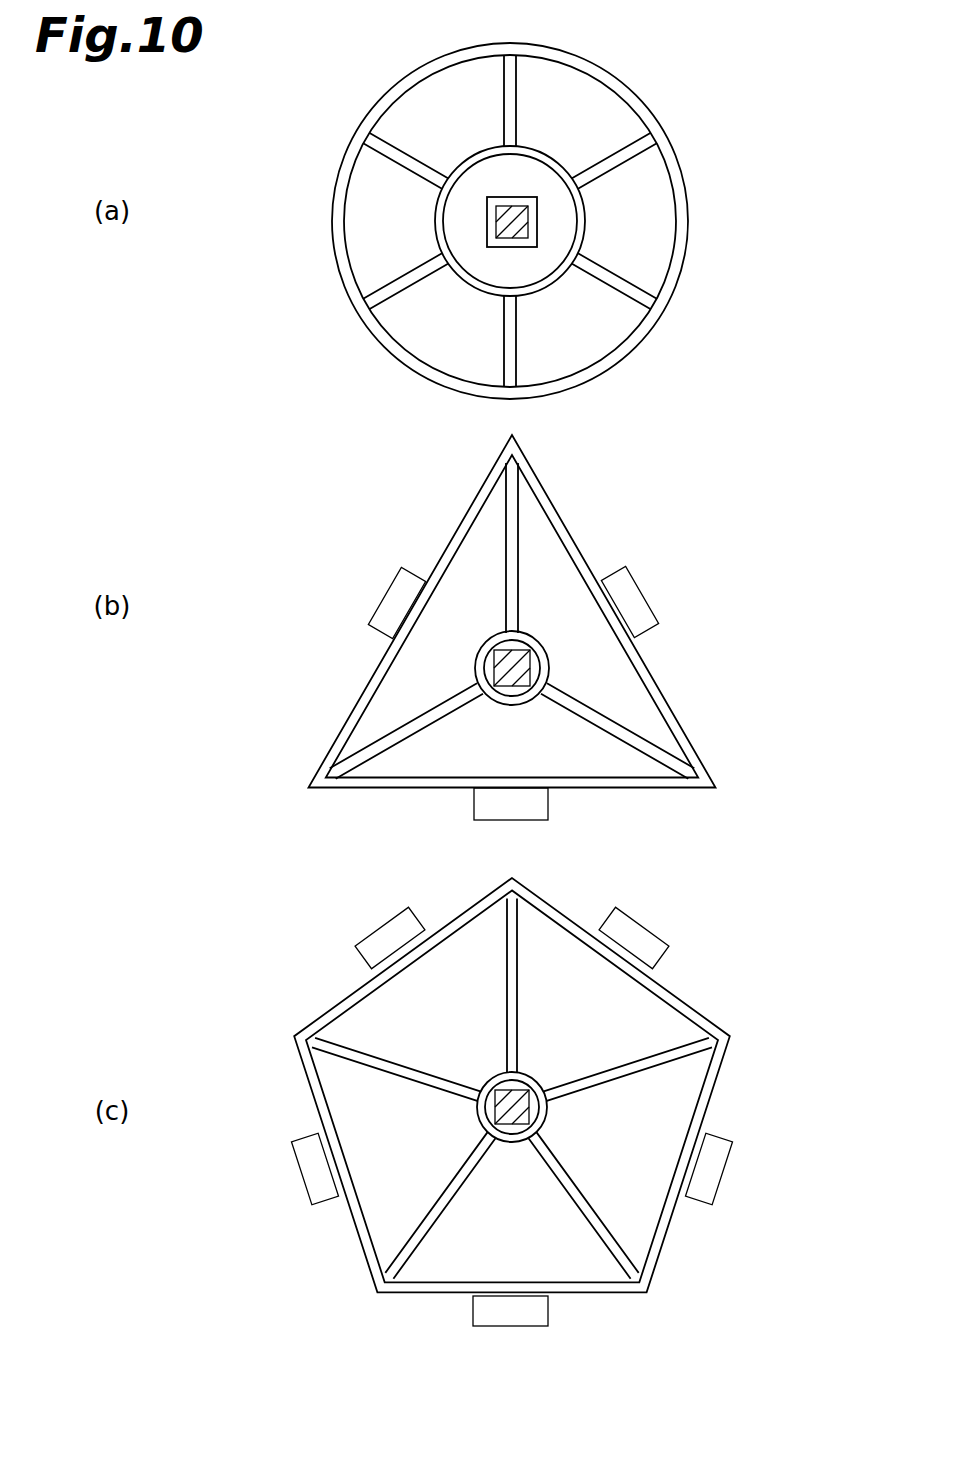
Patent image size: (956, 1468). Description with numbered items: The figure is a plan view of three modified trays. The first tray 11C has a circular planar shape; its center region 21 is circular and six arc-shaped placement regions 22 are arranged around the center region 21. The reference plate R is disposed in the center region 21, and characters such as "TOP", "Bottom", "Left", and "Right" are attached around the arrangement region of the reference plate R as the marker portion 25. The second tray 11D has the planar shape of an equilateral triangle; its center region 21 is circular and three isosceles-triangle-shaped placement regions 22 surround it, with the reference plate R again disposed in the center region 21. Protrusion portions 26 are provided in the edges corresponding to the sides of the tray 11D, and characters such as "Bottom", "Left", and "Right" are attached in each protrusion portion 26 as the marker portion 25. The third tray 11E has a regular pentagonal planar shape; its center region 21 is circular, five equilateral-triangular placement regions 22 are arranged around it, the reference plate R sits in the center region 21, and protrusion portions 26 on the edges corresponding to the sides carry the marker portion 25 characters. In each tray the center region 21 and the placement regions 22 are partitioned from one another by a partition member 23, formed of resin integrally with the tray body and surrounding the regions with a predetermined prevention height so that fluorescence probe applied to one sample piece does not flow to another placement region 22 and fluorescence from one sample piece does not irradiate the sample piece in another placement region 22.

The tray 11C is at (312, 97).
The tray 11D is at (311, 558).
The tray 11E is at (292, 953).
The center region 21 is at (539, 199).
The placement region 22 is at (600, 105).
The partition member 23 is at (423, 72).
The marker portion 25 is at (476, 245).
The protrusion portion 26 is at (383, 592).
The reference plate R is at (496, 196).